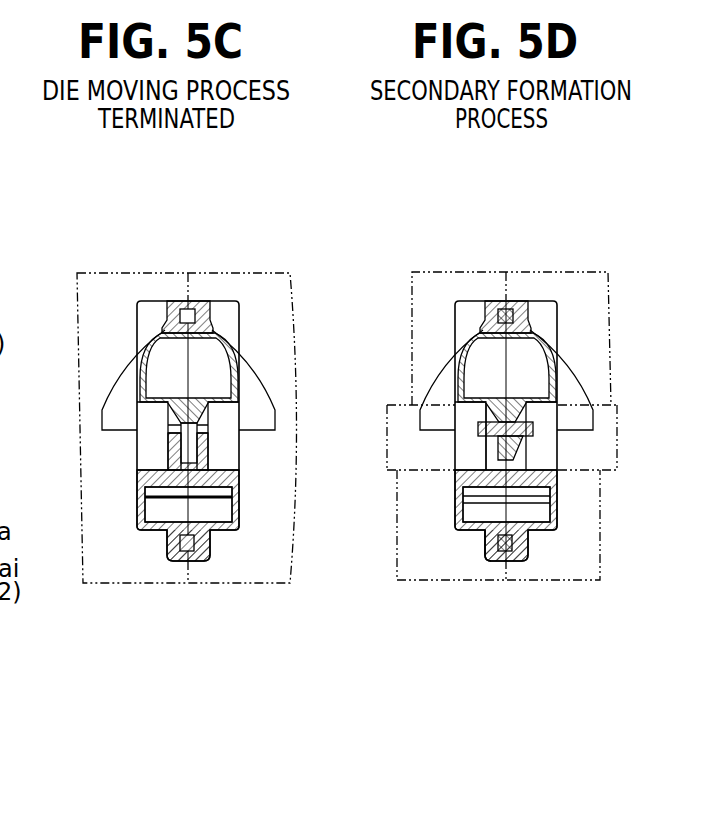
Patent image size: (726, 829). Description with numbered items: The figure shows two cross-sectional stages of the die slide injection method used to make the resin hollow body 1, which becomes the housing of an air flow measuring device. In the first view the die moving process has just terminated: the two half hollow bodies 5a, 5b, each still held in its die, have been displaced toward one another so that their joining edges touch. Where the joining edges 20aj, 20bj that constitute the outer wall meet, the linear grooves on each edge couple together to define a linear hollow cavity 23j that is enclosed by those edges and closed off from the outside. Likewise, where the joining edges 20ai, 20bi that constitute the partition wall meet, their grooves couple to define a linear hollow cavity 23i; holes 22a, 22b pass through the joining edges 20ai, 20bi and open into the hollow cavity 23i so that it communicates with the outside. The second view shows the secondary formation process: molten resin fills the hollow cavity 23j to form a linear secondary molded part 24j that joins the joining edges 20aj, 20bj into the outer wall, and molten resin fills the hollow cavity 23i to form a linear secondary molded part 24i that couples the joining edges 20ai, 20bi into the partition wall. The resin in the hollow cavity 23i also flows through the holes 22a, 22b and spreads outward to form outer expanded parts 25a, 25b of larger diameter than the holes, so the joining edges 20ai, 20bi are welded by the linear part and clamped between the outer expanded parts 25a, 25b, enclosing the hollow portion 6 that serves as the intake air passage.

In FIG. 5D, the hollow body 1 is at (476, 369).
In FIG. 5C, the half hollow body 5a is at (243, 297).
In FIG. 5D, the half hollow body 5a is at (584, 328).
In FIG. 5C, the half hollow body 5b is at (133, 297).
In FIG. 5D, the half hollow body 5b is at (426, 328).
In FIG. 5D, the hollow portion 6 is at (564, 424).
In FIG. 5C, the joining edge 20ai is at (200, 460).
In FIG. 5D, the joining edge 20ai is at (566, 492).
In FIG. 5C, the joining edge 20aj is at (197, 545).
In FIG. 5D, the joining edge 20aj is at (569, 581).
In FIG. 5C, the joining edge 20bi is at (170, 447).
In FIG. 5D, the joining edge 20bi is at (410, 488).
In FIG. 5C, the joining edge 20bj is at (166, 545).
In FIG. 5D, the joining edge 20bj is at (450, 606).
In FIG. 5C, the hole 22a is at (207, 430).
In FIG. 5C, the hole 22b is at (170, 430).
In FIG. 5C, the hollow cavity 23i is at (197, 457).
In FIG. 5C, the hollow cavity 23j is at (196, 312).
In FIG. 5D, the secondary molded part 24i is at (574, 483).
In FIG. 5D, the secondary molded part 24j is at (512, 429).
In FIG. 5D, the outer expanded part 25a is at (586, 410).
In FIG. 5D, the outer expanded part 25b is at (441, 410).